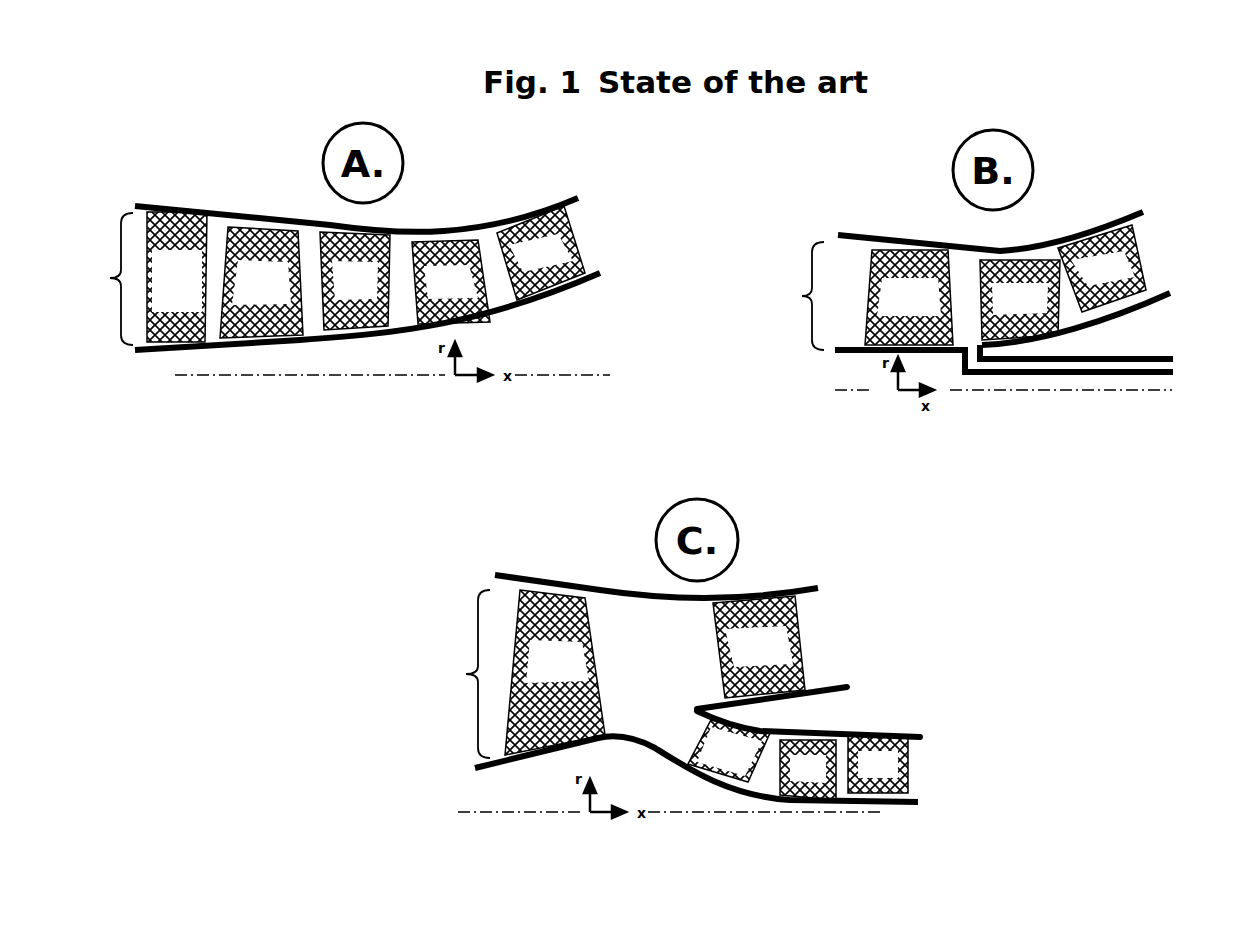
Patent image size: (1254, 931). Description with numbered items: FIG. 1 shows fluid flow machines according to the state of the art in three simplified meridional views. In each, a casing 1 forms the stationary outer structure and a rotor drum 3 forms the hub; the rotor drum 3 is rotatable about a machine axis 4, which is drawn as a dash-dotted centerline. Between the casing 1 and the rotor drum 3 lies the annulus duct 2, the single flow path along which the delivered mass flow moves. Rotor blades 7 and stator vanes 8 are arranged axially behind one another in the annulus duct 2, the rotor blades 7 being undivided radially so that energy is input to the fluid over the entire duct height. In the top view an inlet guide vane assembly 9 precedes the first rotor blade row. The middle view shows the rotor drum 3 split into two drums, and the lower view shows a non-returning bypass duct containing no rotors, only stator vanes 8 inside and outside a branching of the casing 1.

The casing 1 is at (143, 203).
The annulus duct 2 is at (449, 485).
The rotor drum 3 is at (152, 352).
The machine axis 4 is at (213, 376).
The rotor blade 7 is at (243, 238).
The stator vane 8 is at (373, 226).
The inlet guide vane assembly 9 is at (173, 212).